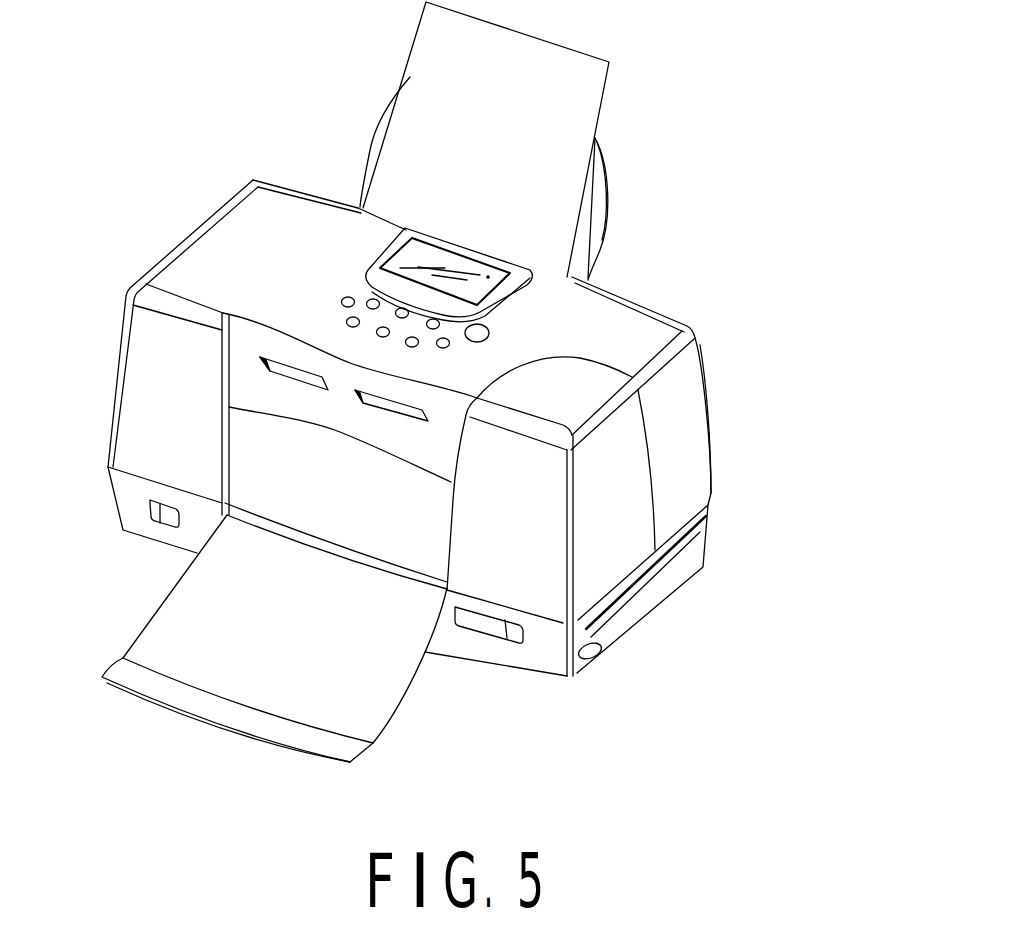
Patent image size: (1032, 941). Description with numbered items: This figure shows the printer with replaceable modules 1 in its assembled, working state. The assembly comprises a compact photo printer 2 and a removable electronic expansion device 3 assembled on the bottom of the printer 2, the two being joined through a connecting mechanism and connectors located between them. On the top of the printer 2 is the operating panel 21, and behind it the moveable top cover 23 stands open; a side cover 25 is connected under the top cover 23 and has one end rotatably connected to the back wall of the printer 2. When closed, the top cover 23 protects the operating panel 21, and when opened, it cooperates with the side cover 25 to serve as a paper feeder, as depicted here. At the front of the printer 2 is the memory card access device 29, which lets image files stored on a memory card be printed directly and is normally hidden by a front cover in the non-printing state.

The printer with replaceable modules 1 is at (768, 338).
The printer 2 is at (690, 425).
The electronic expansion device 3 is at (697, 550).
The operating panel 21 is at (390, 248).
The top cover 23 is at (610, 168).
The side cover 25 is at (590, 257).
The memory card access device 29 is at (385, 409).